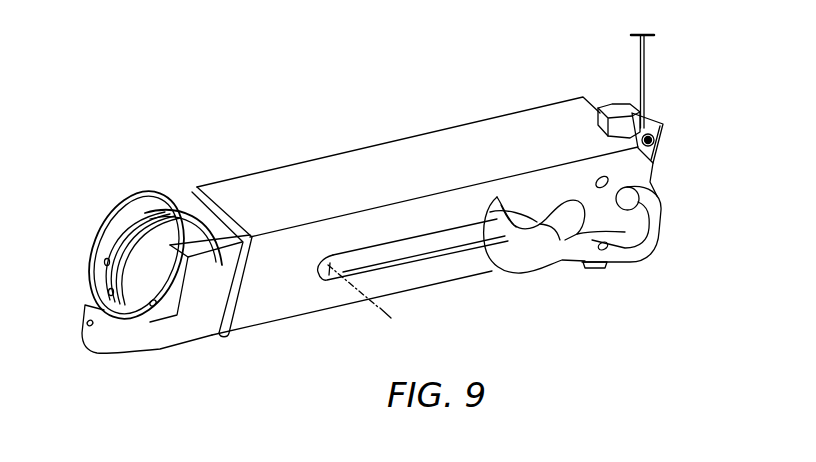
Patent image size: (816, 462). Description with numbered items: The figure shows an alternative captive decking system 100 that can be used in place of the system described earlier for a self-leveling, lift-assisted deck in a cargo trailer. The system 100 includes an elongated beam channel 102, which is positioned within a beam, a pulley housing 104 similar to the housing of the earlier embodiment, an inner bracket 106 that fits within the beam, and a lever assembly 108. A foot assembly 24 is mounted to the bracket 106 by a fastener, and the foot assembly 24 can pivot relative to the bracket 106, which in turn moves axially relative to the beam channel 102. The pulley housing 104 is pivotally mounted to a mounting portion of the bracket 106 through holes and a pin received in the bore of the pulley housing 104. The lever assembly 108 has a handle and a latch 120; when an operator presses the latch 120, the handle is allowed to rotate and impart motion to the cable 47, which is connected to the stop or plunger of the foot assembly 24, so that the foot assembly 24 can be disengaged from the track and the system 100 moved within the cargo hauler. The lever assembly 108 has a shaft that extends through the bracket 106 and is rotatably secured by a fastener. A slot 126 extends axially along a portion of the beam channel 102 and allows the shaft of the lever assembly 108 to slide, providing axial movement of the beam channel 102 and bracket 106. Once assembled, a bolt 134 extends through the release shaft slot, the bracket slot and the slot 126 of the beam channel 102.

The captive decking system 100 is at (232, 178).
The beam channel 102 is at (528, 117).
The pulley housing 104 is at (118, 230).
The inner bracket 106 is at (202, 325).
The lever assembly 108 is at (642, 232).
The latch 120 is at (520, 262).
The slot 126 is at (415, 257).
The bolt 134 is at (380, 308).
The cable 47 is at (647, 63).
The foot assembly 24 is at (665, 143).